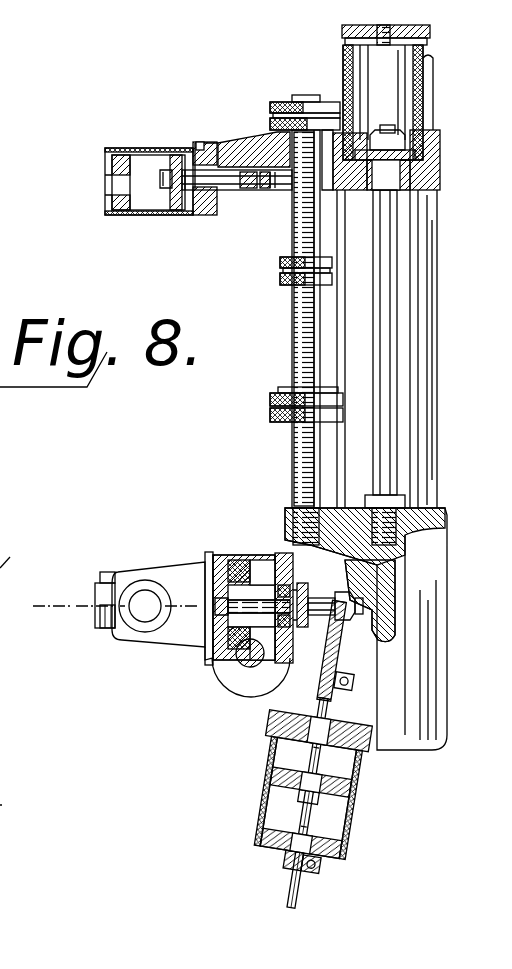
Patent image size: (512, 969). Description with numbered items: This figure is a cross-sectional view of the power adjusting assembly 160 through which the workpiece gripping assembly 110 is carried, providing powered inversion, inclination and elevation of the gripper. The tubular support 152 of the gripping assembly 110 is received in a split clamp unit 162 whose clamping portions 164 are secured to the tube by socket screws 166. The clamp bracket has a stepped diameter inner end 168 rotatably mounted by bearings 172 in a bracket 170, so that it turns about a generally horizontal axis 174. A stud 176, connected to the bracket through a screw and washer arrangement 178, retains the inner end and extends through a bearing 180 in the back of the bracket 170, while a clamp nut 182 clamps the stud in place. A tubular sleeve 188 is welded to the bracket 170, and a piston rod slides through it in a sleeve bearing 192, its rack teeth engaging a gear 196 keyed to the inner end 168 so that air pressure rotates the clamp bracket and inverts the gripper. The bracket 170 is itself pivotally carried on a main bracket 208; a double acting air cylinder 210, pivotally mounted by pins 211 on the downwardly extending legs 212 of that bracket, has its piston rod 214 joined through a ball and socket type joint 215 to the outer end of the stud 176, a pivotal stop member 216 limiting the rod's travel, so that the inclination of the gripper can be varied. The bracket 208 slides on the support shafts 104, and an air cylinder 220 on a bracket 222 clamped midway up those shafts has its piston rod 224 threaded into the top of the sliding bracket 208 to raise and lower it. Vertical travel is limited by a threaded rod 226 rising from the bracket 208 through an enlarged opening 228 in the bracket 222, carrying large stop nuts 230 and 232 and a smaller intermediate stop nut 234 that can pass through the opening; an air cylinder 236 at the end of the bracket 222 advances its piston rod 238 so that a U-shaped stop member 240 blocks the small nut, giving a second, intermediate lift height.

The support shafts 104 is at (437, 440).
The workpiece gripping assembly 110 is at (0, 568).
The tubular support 152 is at (145, 627).
The power adjusting assembly 160 is at (193, 505).
The split clamp unit 162 is at (112, 540).
The clamping portions 164 is at (125, 625).
The socket screws 166 is at (113, 572).
The stepped diameter inner end 168 is at (212, 632).
The bracket 170 is at (250, 690).
The bearings 172 is at (205, 562).
The horizontal axis 174 is at (87, 600).
The stud 176 is at (292, 663).
The screw and washer arrangement 178 is at (215, 605).
The bearing 180 is at (283, 570).
The clamp nut 182 is at (340, 595).
The tubular sleeve 188 is at (240, 660).
The sleeve bearing 192 is at (248, 667).
The gear 196 is at (235, 565).
The main bracket 208 is at (14, 793).
The double acting air cylinder 210 is at (350, 815).
The pins 211 is at (300, 735).
The downwardly extending legs 212 is at (400, 745).
The piston rod 214 is at (325, 690).
The ball and socket type joint 215 is at (352, 628).
The pivotal stop member 216 is at (353, 674).
The air cylinder 220 is at (347, 56).
The bracket 222 is at (433, 178).
The piston rod 224 is at (390, 342).
The rod 226 is at (292, 305).
The enlarged opening 228 is at (333, 150).
The stop nut 230 is at (270, 420).
The stop nut 232 is at (270, 108).
The intermediate stop nut 234 is at (280, 283).
The air cylinder 236 is at (138, 213).
The piston rod 238 is at (226, 195).
The U-shaped stop member 240 is at (283, 190).